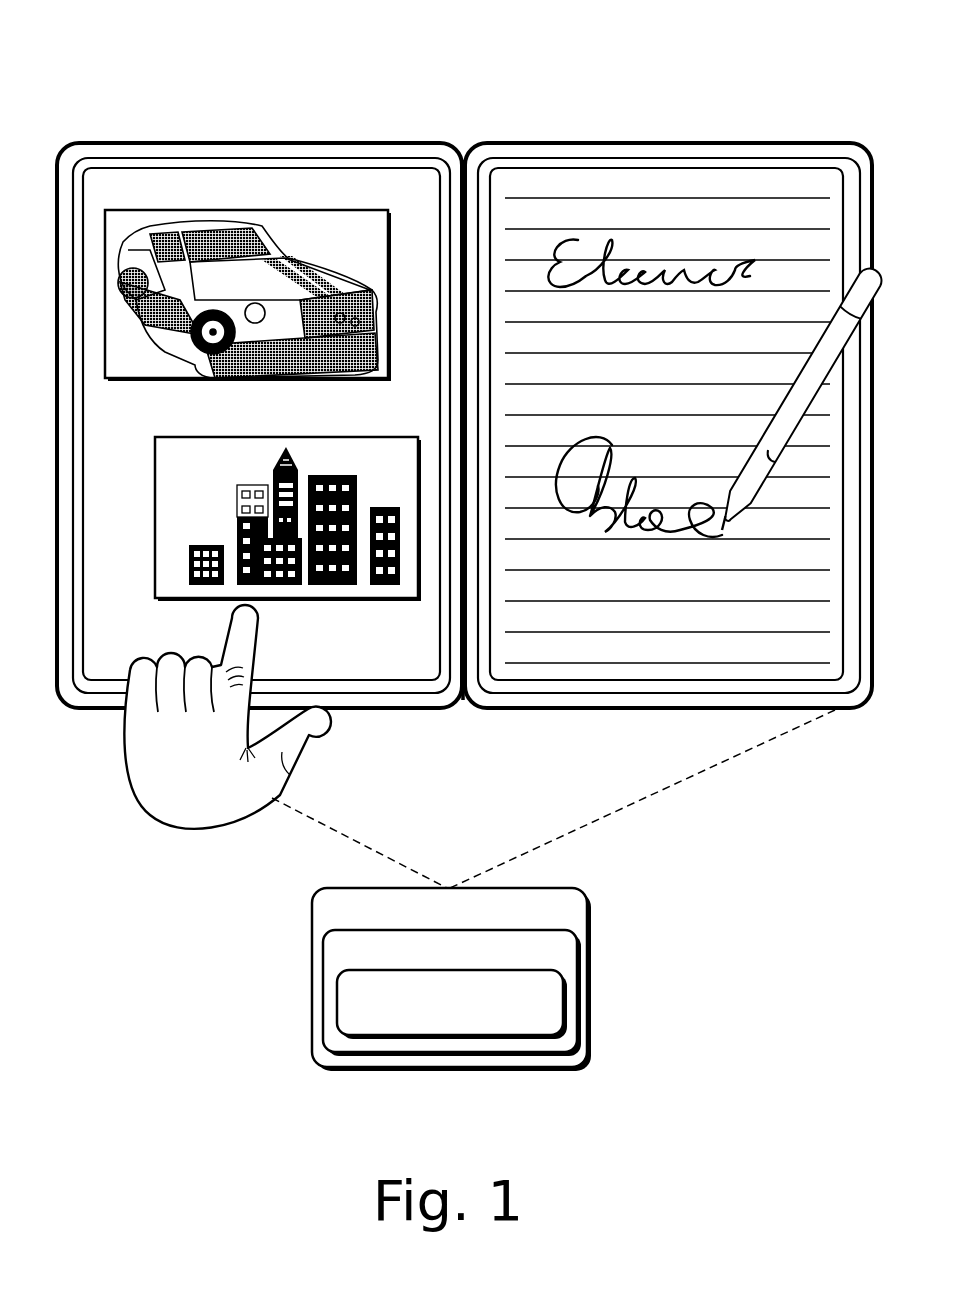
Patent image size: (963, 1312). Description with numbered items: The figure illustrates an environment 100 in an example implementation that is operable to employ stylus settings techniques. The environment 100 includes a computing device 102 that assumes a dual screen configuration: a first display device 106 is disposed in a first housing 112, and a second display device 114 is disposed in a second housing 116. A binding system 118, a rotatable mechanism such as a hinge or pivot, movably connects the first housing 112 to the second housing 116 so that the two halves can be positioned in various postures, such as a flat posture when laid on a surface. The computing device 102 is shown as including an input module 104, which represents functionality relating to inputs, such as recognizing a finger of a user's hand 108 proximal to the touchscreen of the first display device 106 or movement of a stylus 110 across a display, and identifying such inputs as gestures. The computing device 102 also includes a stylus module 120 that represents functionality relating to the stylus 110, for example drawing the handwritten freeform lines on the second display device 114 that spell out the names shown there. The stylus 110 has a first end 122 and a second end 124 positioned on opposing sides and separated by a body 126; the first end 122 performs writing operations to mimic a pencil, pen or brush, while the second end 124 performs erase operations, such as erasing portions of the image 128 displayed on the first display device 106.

The environment 100 is at (153, 63).
The computing device 102 is at (451, 979).
The input module 104 is at (452, 993).
The first display device 106 is at (213, 168).
The user's hand 108 is at (205, 766).
The stylus 110 is at (775, 433).
The first housing 112 is at (338, 143).
The second display device 114 is at (635, 168).
The second housing 116 is at (758, 143).
The binding system 118 is at (465, 163).
The stylus module 120 is at (452, 1004).
The first end 122 is at (720, 532).
The second end 124 is at (856, 284).
The body 126 is at (778, 458).
The image 128 is at (255, 437).